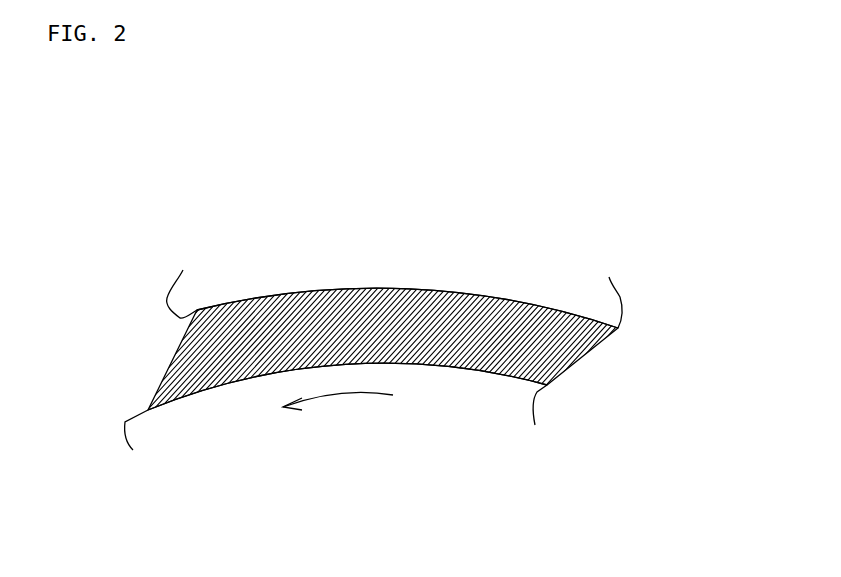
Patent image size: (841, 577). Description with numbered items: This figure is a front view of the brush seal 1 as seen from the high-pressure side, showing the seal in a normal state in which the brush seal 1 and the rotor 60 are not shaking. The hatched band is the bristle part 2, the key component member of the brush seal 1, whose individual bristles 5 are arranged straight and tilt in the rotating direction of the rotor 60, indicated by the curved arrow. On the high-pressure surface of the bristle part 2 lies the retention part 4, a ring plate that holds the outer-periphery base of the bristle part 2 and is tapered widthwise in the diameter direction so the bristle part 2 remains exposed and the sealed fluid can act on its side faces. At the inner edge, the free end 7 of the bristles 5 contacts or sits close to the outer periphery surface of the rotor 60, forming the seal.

The brush seal device 1 is at (380, 208).
The bristle part 2 is at (318, 292).
The retention part 4 is at (443, 277).
The bristles 5 is at (552, 342).
The free end 7 is at (220, 385).
The rotor 60 is at (407, 452).